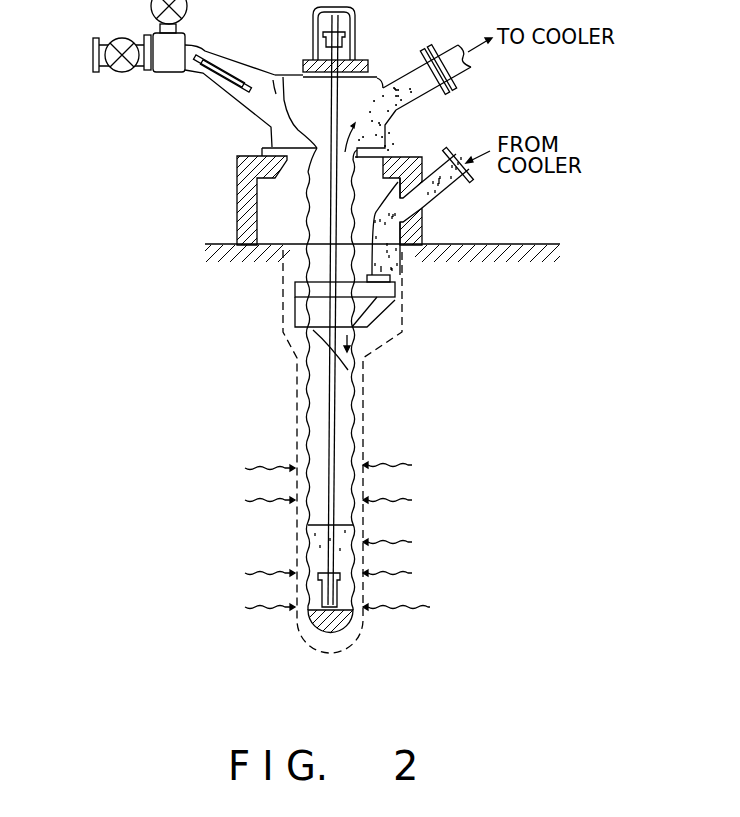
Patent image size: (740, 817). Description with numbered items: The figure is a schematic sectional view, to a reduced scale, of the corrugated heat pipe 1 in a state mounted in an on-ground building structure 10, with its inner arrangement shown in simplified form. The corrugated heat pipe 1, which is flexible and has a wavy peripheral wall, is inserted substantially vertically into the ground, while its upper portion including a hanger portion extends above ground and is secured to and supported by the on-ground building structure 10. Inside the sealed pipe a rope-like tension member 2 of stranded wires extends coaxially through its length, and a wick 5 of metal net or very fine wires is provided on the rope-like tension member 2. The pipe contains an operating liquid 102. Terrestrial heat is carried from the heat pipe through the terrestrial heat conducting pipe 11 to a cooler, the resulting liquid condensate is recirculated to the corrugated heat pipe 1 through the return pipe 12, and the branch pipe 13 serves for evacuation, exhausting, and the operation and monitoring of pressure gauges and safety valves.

The corrugated heat pipe 1 is at (318, 222).
The rope-like tension member 2 is at (330, 198).
The wick 5 is at (287, 252).
The on-ground building structure 10 is at (248, 162).
The terrestrial heat conducting pipe 11 is at (399, 87).
The return pipe 12 is at (447, 183).
The branch pipe 13 is at (259, 87).
The operating liquid 102 is at (310, 537).